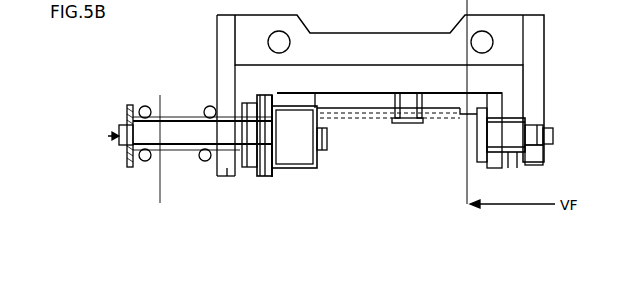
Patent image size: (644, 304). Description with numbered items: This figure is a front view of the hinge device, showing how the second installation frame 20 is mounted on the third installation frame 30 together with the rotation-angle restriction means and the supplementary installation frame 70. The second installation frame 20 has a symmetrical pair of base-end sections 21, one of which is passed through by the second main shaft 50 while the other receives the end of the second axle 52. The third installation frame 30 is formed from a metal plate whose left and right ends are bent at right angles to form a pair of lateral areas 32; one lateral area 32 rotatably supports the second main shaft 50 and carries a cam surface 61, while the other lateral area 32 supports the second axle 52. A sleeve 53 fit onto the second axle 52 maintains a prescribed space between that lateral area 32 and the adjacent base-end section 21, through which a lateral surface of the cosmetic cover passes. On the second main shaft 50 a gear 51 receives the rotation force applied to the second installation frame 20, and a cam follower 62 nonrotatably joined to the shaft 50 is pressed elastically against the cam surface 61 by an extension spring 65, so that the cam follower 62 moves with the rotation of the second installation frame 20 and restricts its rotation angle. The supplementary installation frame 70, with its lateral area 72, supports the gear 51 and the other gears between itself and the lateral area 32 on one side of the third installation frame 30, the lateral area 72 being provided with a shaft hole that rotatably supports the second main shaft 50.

The second installation frame 20 is at (533, 28).
The base-end section 21 is at (223, 178).
The third installation frame 30 is at (372, 101).
The lateral area 32 is at (272, 178).
The second main shaft 50 is at (108, 137).
The gear 51 is at (302, 153).
The second axle 52 is at (547, 130).
The sleeve 53 is at (517, 168).
The cam surface 61 is at (267, 180).
The cam follower 62 is at (243, 178).
The extension spring 65 is at (143, 173).
The supplementary installation frame 70 is at (353, 113).
The lateral area 72 is at (323, 152).